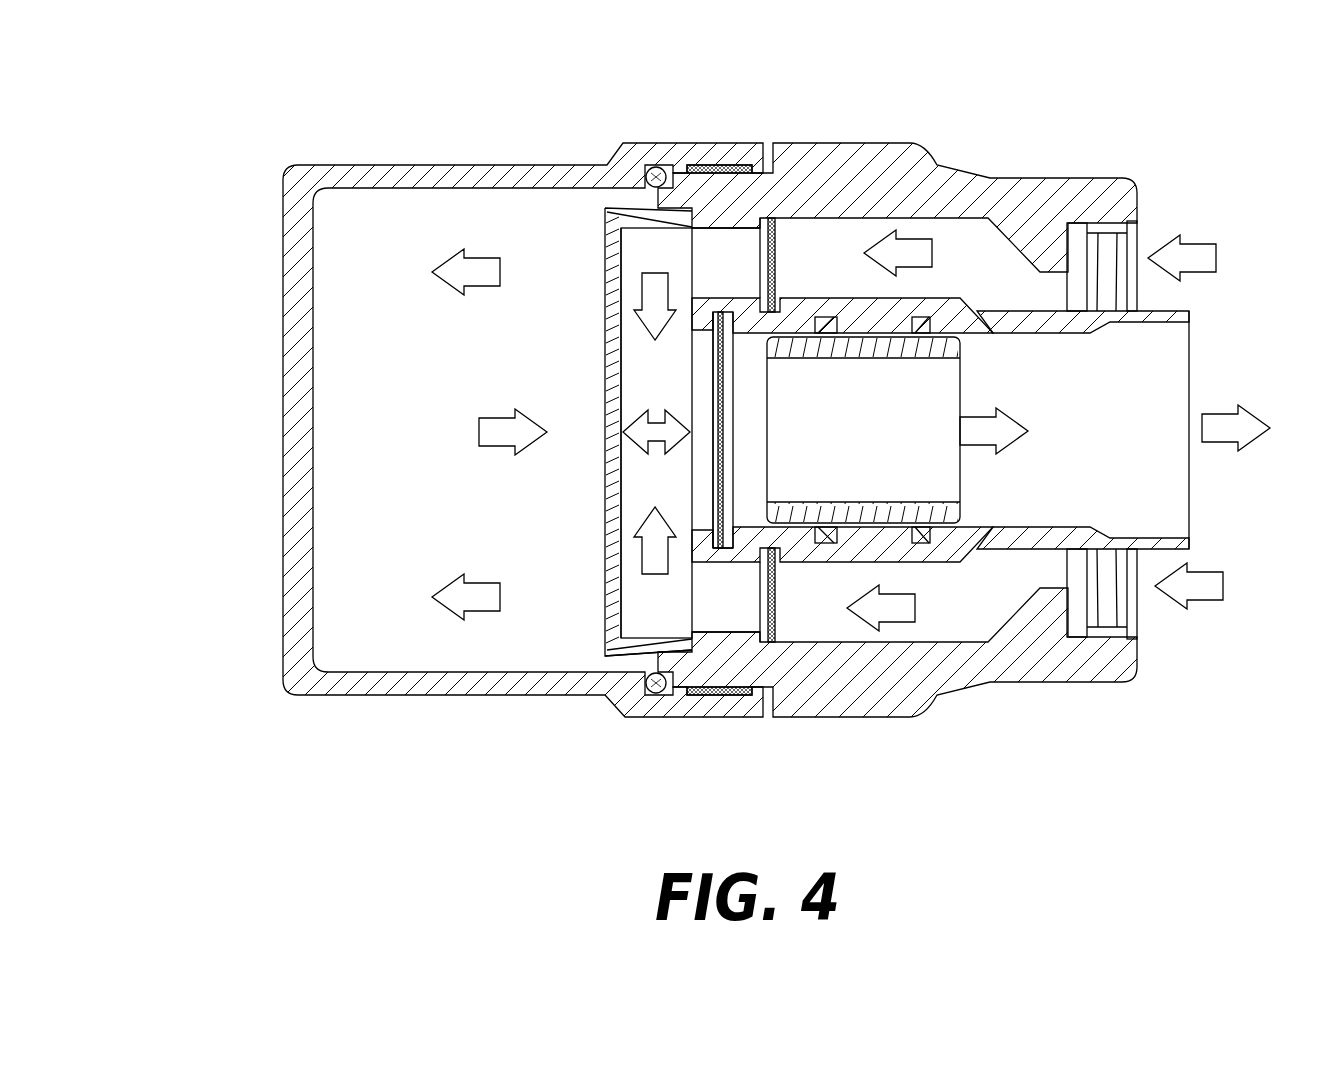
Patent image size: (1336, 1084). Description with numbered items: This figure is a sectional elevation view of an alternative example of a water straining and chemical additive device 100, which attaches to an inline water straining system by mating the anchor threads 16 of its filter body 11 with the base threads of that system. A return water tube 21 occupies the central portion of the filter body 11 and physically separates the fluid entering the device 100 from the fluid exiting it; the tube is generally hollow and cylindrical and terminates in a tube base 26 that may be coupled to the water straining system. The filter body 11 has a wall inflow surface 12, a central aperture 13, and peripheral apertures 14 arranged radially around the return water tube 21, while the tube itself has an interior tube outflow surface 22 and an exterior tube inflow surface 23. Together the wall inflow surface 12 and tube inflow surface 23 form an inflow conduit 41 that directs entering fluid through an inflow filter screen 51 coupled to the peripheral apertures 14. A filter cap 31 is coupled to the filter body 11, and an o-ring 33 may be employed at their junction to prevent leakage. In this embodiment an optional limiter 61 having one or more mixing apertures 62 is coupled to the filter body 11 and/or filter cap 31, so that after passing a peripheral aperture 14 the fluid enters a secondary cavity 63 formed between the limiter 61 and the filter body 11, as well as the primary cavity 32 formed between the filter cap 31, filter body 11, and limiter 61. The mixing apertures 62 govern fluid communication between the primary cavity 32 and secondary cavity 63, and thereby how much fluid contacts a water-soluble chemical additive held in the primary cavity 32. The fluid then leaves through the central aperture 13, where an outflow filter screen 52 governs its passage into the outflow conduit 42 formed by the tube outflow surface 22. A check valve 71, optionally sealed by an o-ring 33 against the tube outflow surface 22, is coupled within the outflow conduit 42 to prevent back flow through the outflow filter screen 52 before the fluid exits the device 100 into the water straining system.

The water straining and chemical additive device 100 is at (185, 138).
The filter body 11 is at (870, 690).
The wall inflow surface 12 is at (938, 633).
The central aperture 13 is at (667, 350).
The peripheral apertures 14 is at (720, 603).
The anchor threads 16 is at (1095, 595).
The return water tube 21 is at (972, 538).
The tube outflow surface 22 is at (1057, 520).
The tube inflow surface 23 is at (943, 572).
The tube base 26 is at (1150, 316).
The filter cap 31 is at (305, 680).
The primary cavity 32 is at (388, 385).
The o-ring 33 is at (921, 528).
The inflow conduit 41 is at (992, 597).
The outflow conduit 42 is at (1133, 453).
The inflow filter screen 51 is at (780, 600).
The outflow filter screen 52 is at (718, 472).
The limiter 61 is at (657, 658).
The mixing aperture 62 is at (612, 435).
The secondary cavity 63 is at (628, 517).
The check valve 71 is at (847, 518).